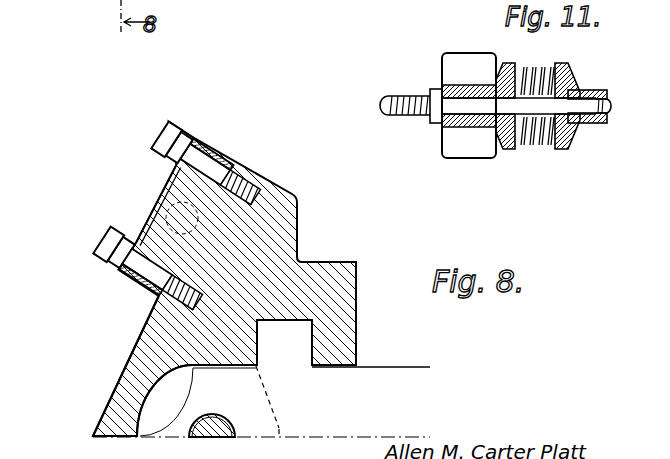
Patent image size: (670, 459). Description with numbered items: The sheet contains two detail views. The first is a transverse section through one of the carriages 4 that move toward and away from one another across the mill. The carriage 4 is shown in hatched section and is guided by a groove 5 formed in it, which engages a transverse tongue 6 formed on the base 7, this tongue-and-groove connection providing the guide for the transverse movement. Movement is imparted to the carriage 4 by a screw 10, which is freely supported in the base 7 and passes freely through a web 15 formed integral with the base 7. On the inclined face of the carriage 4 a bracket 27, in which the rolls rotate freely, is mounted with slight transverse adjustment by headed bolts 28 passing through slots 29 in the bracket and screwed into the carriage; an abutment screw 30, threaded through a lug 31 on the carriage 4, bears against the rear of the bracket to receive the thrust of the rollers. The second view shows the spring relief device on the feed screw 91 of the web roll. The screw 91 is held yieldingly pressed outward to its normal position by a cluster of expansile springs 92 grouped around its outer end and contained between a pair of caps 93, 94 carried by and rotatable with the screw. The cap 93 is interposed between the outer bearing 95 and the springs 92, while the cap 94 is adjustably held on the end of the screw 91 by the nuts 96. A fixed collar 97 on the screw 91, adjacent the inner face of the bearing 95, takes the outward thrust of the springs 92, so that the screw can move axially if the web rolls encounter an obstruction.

In FIG. 8, the carriage 4 is at (286, 274).
In FIG. 8, the groove 5 is at (312, 341).
In FIG. 8, the transverse tongue 6 is at (284, 342).
In FIG. 8, the base 7 is at (350, 378).
In FIG. 8, the screw 10 is at (219, 426).
In FIG. 8, the web 15 is at (158, 403).
In FIG. 8, the bracket 27 is at (108, 273).
In FIG. 8, the headed bolt 28 is at (206, 152).
In FIG. 8, the slot 29 is at (134, 292).
In FIG. 8, the abutment screw 30 is at (155, 195).
In FIG. 8, the lug 31 is at (140, 206).
In FIG. 11, the screw 91 is at (397, 113).
In FIG. 11, the expansile spring 92 is at (541, 72).
In FIG. 11, the cap 93 is at (503, 148).
In FIG. 11, the cap 94 is at (566, 147).
In FIG. 11, the outer bearing 95 is at (466, 130).
In FIG. 11, the nut 96 is at (596, 124).
In FIG. 11, the fixed collar 97 is at (436, 90).